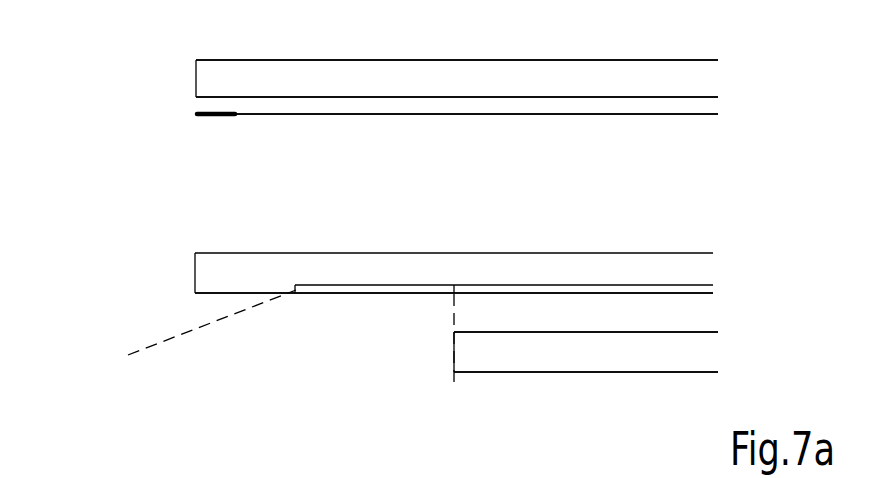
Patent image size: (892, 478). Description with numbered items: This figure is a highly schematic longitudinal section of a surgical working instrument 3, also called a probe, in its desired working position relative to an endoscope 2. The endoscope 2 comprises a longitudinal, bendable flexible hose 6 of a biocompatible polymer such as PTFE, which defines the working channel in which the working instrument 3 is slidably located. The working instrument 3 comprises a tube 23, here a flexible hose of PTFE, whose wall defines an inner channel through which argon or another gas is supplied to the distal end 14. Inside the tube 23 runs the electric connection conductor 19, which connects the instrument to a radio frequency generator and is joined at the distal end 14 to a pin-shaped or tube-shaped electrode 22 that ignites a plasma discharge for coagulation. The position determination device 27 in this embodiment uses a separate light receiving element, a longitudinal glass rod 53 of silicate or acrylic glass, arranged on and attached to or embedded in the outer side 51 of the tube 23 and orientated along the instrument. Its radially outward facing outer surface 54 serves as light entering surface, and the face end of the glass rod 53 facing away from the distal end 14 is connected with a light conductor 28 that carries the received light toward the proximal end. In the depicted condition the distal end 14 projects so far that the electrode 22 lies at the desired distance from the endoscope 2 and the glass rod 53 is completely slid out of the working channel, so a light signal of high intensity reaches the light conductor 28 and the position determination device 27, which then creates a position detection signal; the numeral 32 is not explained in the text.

The surgical working instrument 3 is at (126, 116).
The tube 23 is at (525, 78).
The electric connection conductor 19 is at (336, 114).
The electrode 22 is at (212, 112).
The distal end 14 is at (207, 260).
The outer side 51 is at (208, 296).
The position determination device 27 is at (288, 345).
The glass rod 53 is at (334, 287).
The outer surface 54 is at (385, 295).
The light conductor 28 is at (525, 291).
The flexible hose 6 is at (642, 358).
The endoscope 2 is at (568, 376).
The section 32 is at (248, 473).